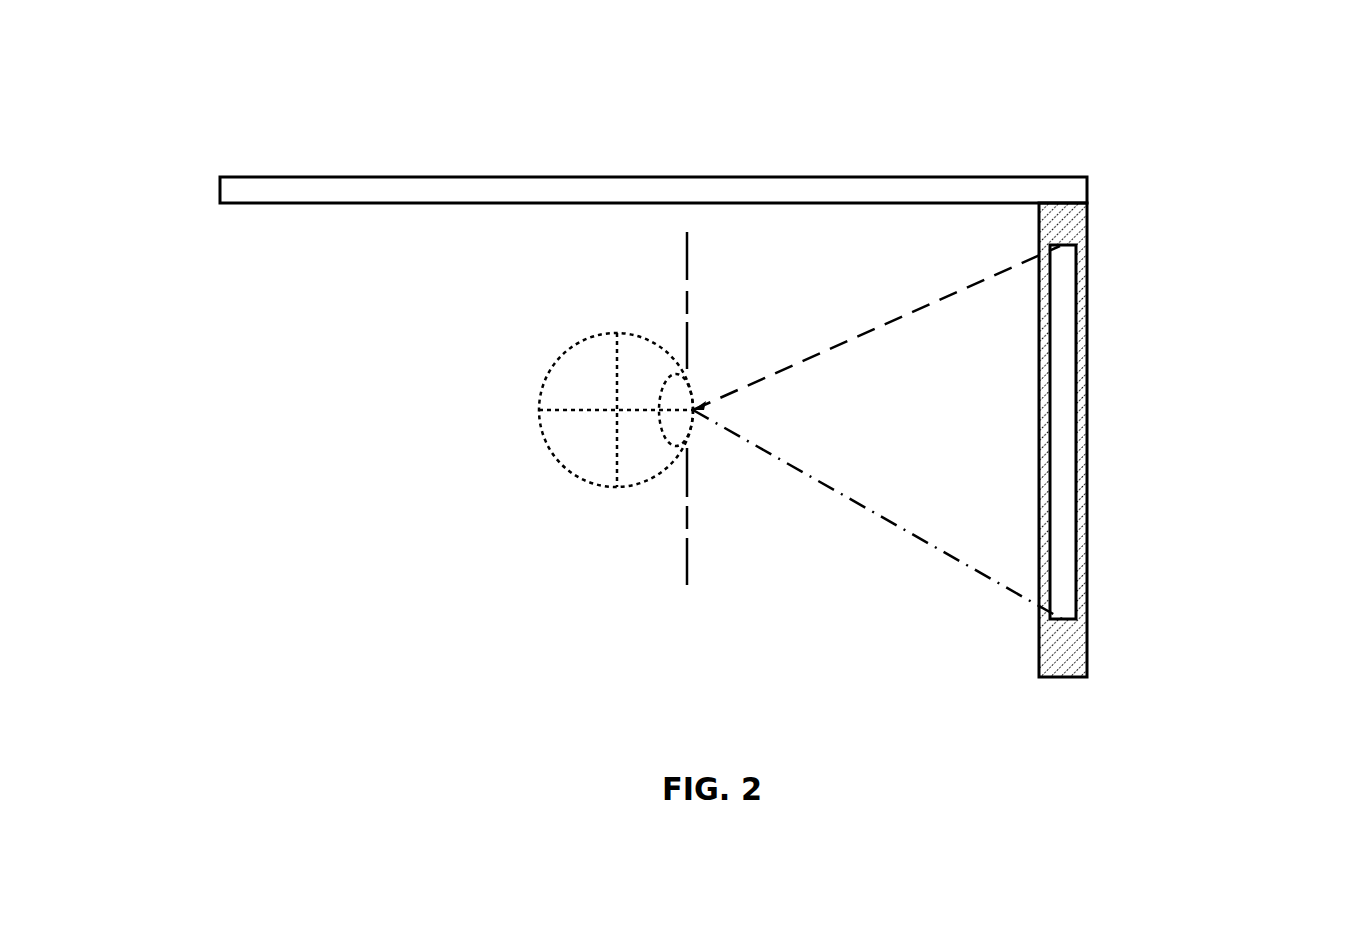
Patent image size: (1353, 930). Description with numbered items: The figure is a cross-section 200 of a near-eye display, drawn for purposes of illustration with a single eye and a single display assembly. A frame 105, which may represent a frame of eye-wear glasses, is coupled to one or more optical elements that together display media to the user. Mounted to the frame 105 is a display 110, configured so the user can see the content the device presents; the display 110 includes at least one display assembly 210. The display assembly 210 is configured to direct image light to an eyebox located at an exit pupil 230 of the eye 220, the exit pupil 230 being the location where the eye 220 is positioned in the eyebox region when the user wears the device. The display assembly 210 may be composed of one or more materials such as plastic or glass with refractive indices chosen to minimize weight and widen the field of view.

The cross-section 200 is at (374, 54).
The frame 105 is at (943, 177).
The display assembly 210 is at (1058, 320).
The display 110 is at (1088, 553).
The eye 220 is at (578, 342).
The exit pupil 230 is at (687, 505).